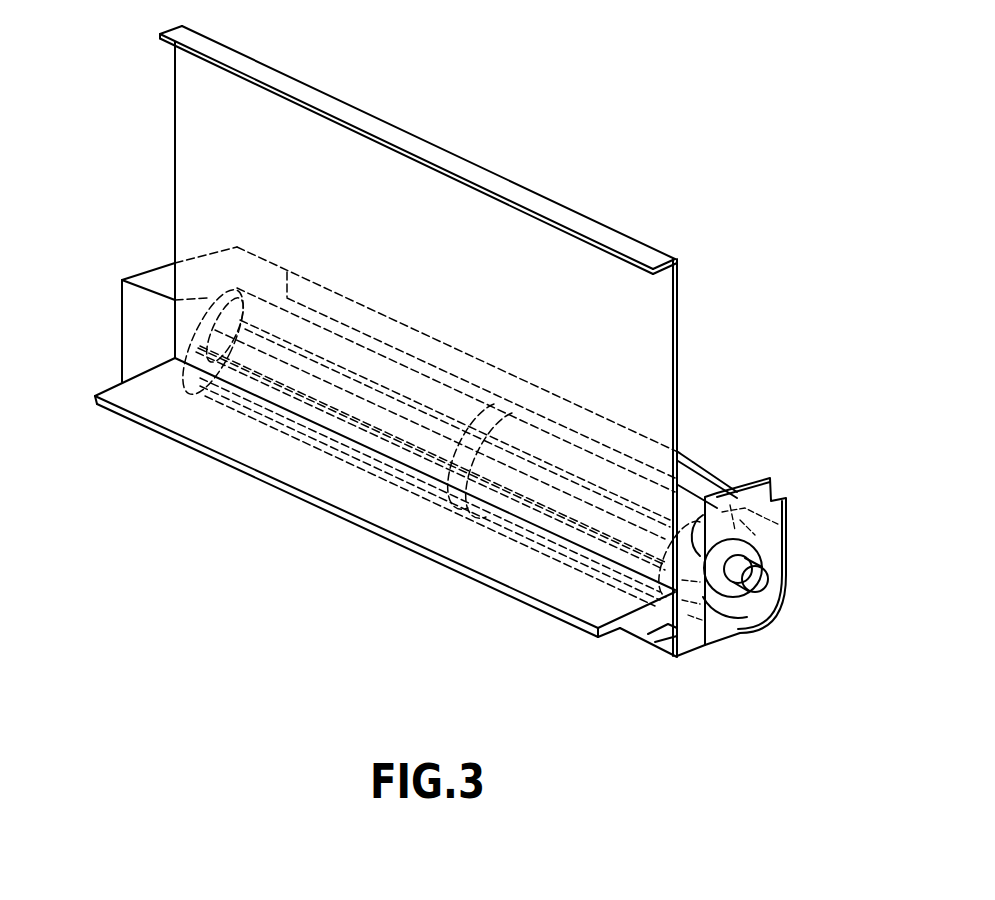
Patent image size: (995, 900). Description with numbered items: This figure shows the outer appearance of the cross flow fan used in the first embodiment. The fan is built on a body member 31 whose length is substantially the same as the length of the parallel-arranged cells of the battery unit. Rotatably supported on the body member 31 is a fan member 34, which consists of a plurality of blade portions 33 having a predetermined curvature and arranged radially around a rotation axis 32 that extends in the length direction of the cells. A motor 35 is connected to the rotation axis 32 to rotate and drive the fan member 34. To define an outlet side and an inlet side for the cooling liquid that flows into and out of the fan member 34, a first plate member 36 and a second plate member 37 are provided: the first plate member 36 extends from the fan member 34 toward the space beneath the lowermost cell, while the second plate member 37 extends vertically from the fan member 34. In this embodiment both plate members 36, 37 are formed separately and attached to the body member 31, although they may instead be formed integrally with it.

The body member 31 is at (757, 502).
The rotation axis 32 is at (758, 578).
The blade portions 33 is at (580, 449).
The fan member 34 is at (562, 428).
The motor 35 is at (140, 337).
The first plate member 36 is at (170, 413).
The second plate member 37 is at (440, 146).